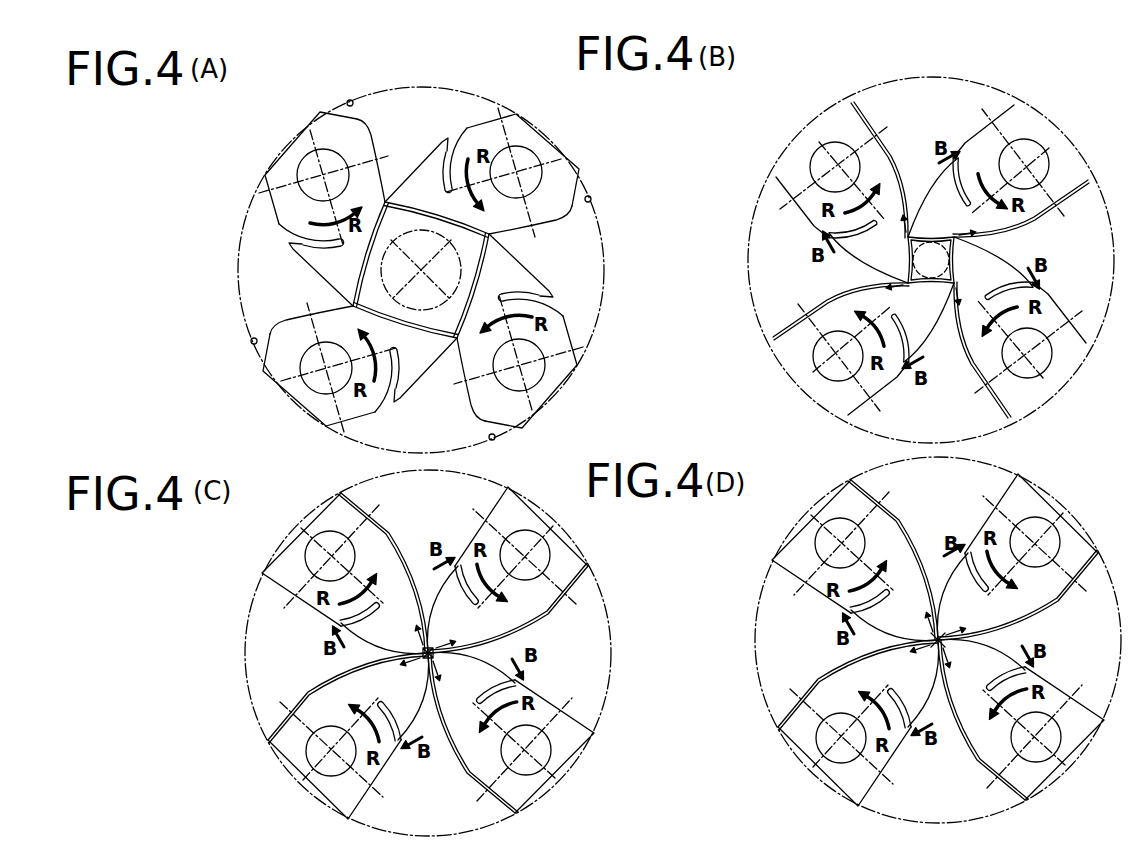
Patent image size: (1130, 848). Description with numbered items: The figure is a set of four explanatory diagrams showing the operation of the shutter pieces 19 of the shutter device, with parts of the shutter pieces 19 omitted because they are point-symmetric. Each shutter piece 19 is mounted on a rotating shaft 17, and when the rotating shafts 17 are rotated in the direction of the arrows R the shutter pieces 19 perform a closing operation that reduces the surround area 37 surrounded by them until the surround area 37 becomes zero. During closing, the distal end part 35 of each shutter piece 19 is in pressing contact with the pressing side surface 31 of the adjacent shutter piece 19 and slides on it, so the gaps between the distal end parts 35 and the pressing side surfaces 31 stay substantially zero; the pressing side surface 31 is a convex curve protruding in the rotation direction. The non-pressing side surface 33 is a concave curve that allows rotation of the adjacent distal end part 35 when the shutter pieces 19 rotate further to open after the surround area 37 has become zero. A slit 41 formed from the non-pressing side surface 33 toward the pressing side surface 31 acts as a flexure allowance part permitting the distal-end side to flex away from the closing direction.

The rotating shaft 17 is at (303, 160).
The shutter piece 19 is at (330, 126).
The pressing side surface 31 is at (428, 233).
The non-pressing side surface 33 is at (252, 305).
The distal end part 35 is at (393, 188).
The surround area 37 is at (462, 263).
The slit 41 is at (288, 253).